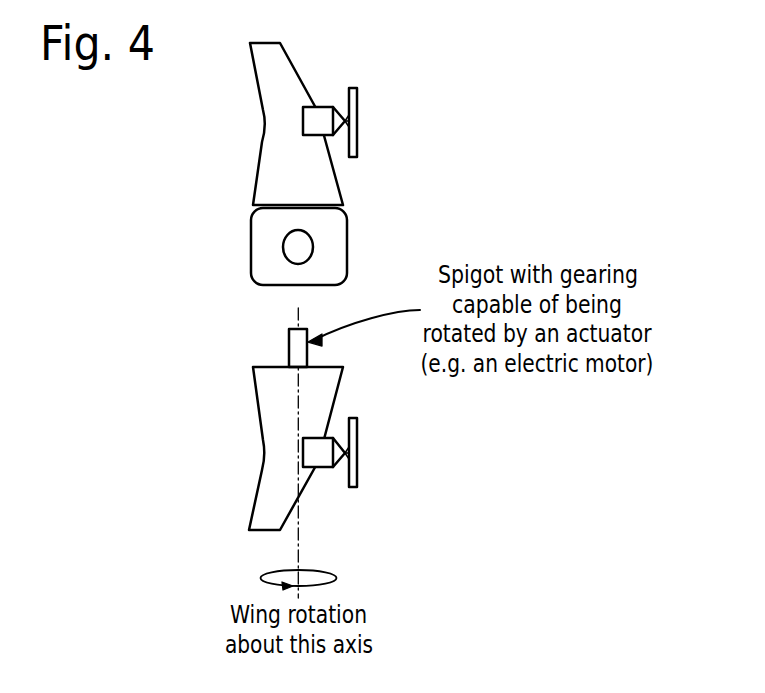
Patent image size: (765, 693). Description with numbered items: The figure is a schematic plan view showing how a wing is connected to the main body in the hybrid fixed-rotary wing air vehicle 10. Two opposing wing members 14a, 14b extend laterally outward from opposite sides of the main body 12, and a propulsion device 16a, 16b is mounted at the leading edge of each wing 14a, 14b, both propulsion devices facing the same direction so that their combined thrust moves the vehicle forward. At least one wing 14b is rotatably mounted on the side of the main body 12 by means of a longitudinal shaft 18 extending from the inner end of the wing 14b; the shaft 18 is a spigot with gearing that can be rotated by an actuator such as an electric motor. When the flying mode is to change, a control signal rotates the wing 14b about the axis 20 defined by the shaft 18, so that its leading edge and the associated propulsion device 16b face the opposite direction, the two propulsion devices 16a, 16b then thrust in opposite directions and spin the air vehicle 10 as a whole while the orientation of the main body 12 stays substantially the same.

The air vehicle 10 is at (412, 82).
The main body 12 is at (268, 238).
The wing member 14a is at (272, 95).
The wing member 14b is at (285, 440).
The propulsion device 16a is at (355, 133).
The propulsion device 16b is at (355, 467).
The longitudinal shaft 18 is at (289, 349).
The axis 20 is at (298, 543).